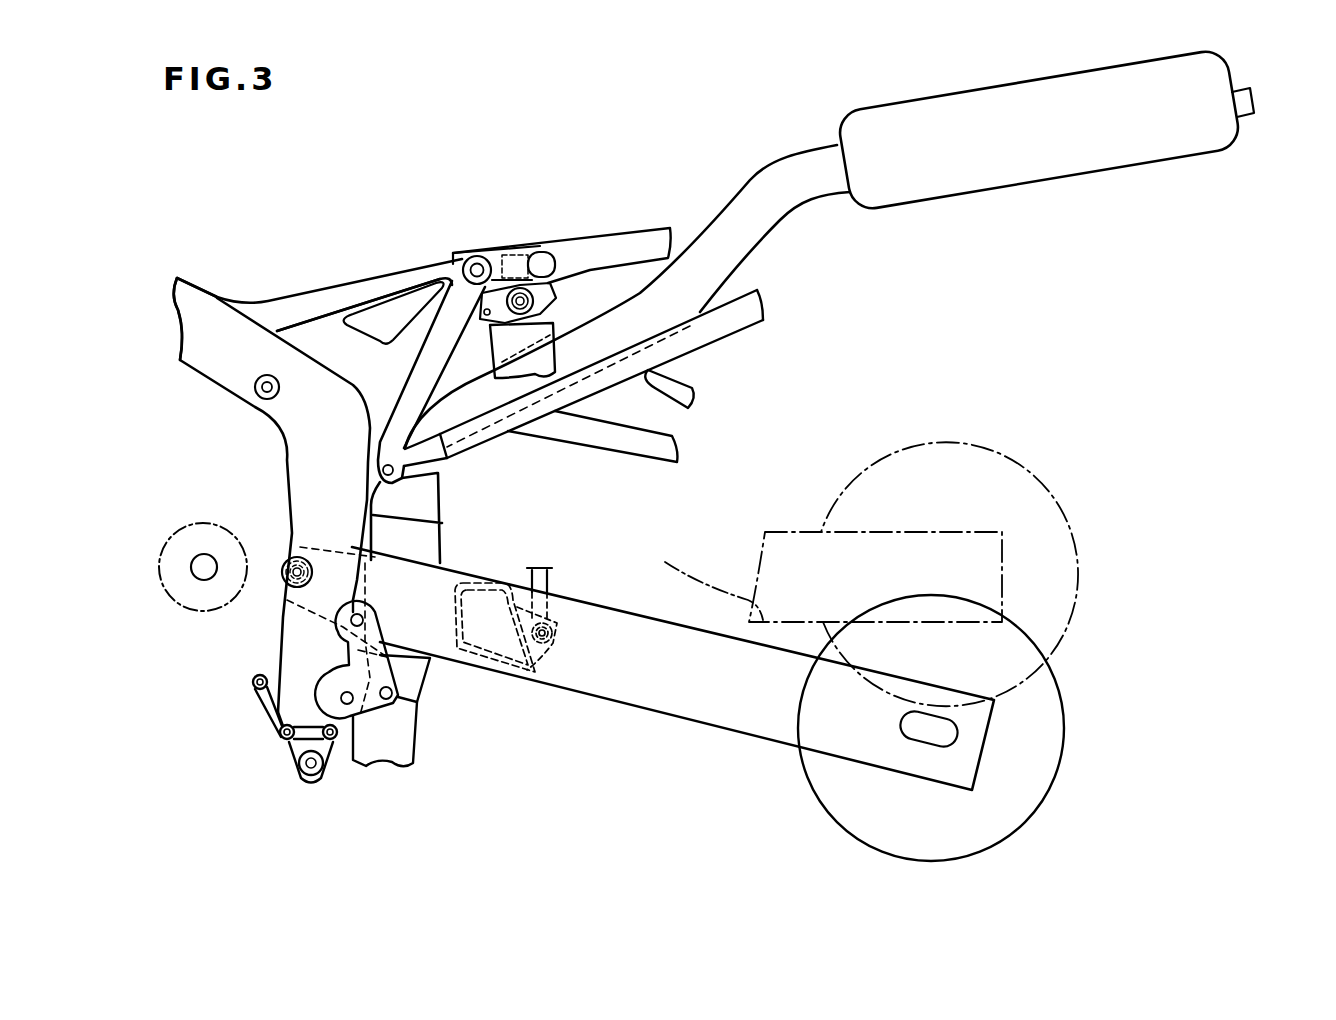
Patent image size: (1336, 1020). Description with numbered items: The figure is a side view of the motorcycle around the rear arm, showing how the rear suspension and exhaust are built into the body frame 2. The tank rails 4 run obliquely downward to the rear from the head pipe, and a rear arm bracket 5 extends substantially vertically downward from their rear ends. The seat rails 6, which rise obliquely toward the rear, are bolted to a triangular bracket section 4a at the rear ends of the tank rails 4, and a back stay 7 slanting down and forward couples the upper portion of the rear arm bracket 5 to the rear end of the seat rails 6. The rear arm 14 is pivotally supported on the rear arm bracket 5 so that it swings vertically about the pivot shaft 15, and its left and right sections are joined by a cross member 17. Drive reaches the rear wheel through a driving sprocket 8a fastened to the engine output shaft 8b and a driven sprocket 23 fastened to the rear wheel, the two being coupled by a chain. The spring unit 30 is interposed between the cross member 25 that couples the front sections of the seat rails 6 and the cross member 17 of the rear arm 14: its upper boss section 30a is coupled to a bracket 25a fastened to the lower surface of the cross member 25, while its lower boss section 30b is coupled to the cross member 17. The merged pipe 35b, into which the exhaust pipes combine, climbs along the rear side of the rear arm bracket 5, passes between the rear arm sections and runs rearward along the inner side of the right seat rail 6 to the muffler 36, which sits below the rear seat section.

The body frame 2 is at (303, 264).
The tank rail 4 is at (205, 292).
The triangular bracket section 4a is at (410, 270).
The rear arm bracket 5 is at (281, 634).
The seat rail 6 is at (640, 232).
The back stay 7 is at (719, 338).
The driving sprocket 8a is at (175, 533).
The output shaft 8b is at (207, 554).
The rear arm 14 is at (670, 620).
The pivot shaft 15 is at (278, 557).
The cross member 17 is at (437, 572).
The driven sprocket 23 is at (1066, 627).
The cross member 25 is at (518, 252).
The bracket 25a is at (553, 262).
The spring unit 30 is at (561, 351).
The upper boss section 30a is at (553, 293).
The lower boss section 30b is at (563, 645).
The merged pipe 35b is at (415, 745).
The muffler 36 is at (1086, 174).